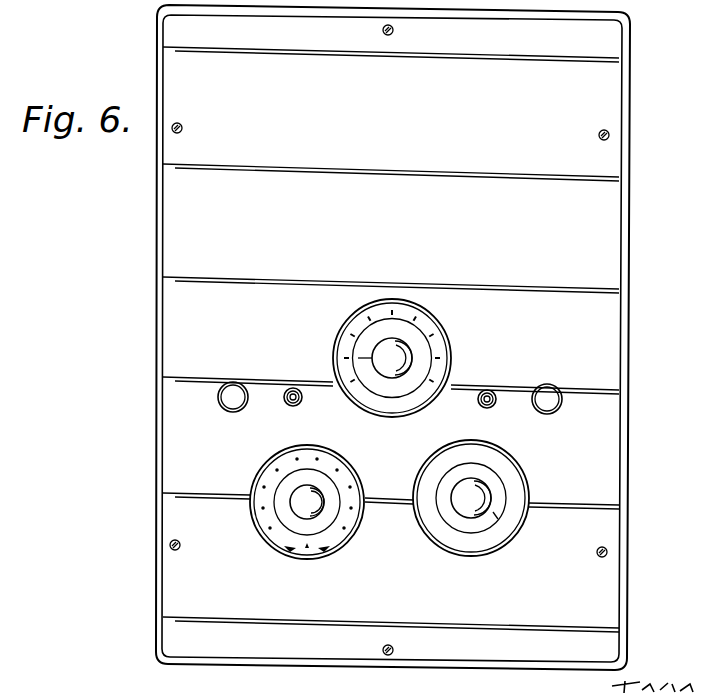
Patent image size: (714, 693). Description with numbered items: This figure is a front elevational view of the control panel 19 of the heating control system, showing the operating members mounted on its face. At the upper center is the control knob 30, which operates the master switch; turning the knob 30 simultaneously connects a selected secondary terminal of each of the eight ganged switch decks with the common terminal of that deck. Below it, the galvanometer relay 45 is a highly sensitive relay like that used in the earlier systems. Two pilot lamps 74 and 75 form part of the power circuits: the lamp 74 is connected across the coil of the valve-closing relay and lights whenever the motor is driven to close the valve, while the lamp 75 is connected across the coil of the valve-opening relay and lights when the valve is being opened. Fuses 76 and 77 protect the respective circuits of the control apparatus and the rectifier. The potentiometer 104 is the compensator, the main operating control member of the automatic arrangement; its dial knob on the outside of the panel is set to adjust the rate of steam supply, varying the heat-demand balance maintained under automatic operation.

The control panel 19 is at (600, 103).
The control knob 30 is at (450, 342).
The galvanometer relay 45 is at (528, 477).
The pilot lamp 74 is at (299, 406).
The pilot lamp 75 is at (492, 389).
The fuse 76 is at (560, 388).
The fuse 77 is at (232, 412).
The potentiometer 104 is at (277, 553).